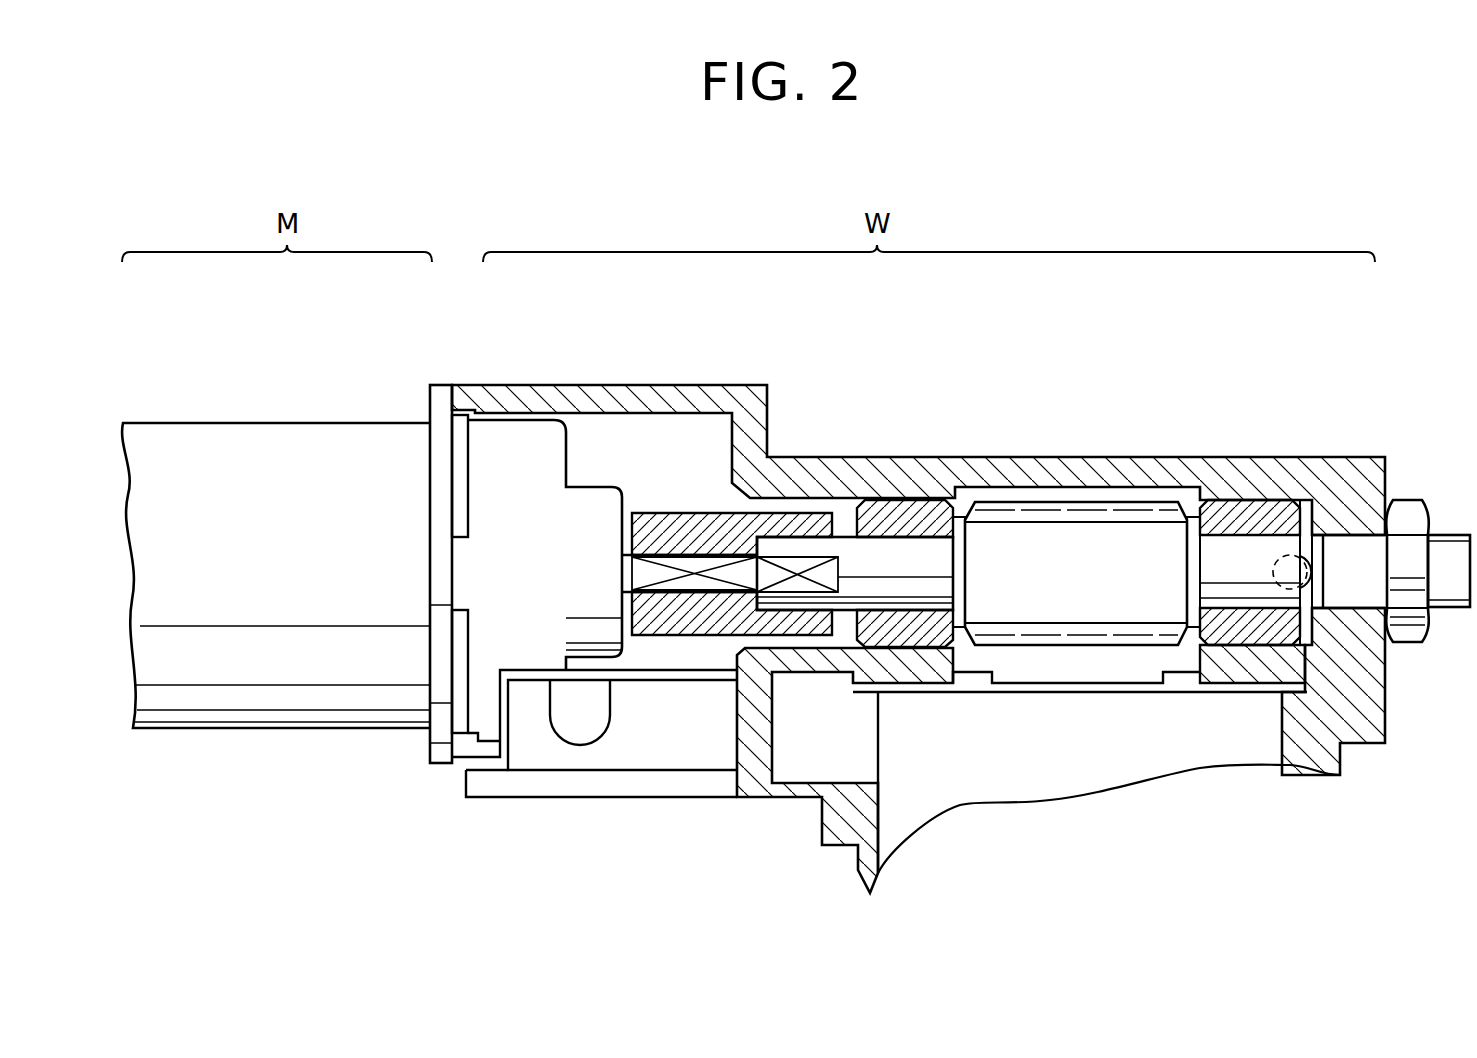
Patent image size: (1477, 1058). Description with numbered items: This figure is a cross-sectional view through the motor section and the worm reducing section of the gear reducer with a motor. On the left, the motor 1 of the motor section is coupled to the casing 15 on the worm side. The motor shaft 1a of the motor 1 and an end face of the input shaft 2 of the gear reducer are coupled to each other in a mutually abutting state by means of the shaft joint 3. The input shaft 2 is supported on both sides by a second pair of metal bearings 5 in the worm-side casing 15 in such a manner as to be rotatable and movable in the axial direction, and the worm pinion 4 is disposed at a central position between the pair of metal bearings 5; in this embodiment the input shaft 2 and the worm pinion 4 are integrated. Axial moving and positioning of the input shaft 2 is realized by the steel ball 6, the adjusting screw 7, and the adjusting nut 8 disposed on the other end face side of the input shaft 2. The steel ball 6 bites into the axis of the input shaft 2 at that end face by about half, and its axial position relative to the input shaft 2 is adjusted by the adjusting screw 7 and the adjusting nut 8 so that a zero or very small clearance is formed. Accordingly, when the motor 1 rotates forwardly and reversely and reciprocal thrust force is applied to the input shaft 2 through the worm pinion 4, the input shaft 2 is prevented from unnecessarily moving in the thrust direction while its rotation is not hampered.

The motor 1 is at (333, 450).
The motor shaft 1a is at (677, 563).
The casing 15 is at (497, 403).
The shaft joint 3 is at (727, 527).
The input shaft 2 is at (868, 563).
The metal bearings 5 is at (913, 512).
The worm pinion 4 is at (997, 552).
The steel ball 6 is at (1288, 572).
The adjusting screw 7 is at (1348, 555).
The adjusting nut 8 is at (1403, 510).